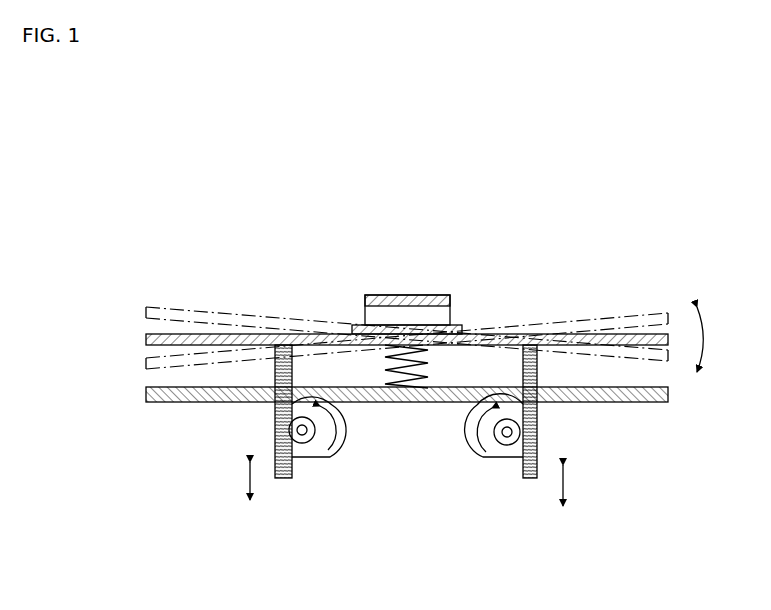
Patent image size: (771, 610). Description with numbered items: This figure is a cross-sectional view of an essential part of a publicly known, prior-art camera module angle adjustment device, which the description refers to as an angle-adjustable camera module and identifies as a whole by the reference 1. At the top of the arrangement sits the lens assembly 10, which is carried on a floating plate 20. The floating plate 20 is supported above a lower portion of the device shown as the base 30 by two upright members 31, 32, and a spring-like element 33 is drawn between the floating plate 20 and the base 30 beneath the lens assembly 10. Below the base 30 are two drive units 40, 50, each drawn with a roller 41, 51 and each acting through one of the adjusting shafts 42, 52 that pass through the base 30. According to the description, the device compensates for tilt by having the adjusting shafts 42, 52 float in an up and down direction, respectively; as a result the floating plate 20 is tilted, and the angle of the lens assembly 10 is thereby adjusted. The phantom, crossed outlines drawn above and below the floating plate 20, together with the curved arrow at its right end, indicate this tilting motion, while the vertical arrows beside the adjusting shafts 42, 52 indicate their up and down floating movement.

The mirror device 1 is at (254, 226).
The lens assembly 10 is at (449, 300).
The floating plate 20 is at (146, 337).
The base plate 30 is at (157, 402).
The first support column 31 is at (270, 403).
The second support column 32 is at (545, 405).
The spring 33 is at (430, 366).
The first driving unit 40 is at (341, 476).
The first roller 41 is at (338, 434).
The adjusting shaft 42 is at (287, 478).
The second driving unit 50 is at (474, 481).
The second roller 51 is at (497, 459).
The adjusting shaft 52 is at (516, 479).